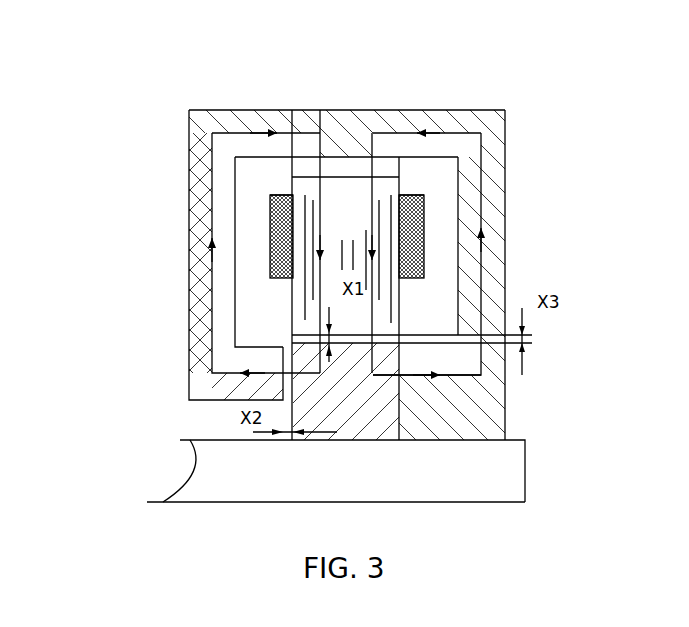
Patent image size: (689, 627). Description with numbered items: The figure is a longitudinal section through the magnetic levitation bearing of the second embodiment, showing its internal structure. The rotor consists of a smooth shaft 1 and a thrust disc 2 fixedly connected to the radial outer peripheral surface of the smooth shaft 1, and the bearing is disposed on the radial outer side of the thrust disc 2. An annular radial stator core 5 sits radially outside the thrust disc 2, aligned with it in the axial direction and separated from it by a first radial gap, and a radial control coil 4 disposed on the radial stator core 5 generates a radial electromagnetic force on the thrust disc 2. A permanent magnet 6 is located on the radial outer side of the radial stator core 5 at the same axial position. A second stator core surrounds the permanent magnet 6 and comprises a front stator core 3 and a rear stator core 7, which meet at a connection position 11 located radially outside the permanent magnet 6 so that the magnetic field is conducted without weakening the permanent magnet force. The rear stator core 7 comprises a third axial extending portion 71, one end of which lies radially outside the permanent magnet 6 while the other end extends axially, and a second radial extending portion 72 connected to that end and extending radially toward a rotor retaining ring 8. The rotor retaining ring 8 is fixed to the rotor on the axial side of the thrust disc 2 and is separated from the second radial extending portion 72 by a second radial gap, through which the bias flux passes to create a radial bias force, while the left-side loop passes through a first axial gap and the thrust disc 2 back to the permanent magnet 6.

The smooth shaft 1 is at (227, 474).
The thrust disc 2 is at (330, 408).
The front stator core 3 is at (205, 318).
The radial control coil 4 is at (283, 233).
The radial stator core 5 is at (273, 182).
The permanent magnet 6 is at (335, 167).
The rear stator core 7 is at (418, 234).
The third axial extending portion 71 is at (373, 128).
The second radial extending portion 72 is at (498, 228).
The rotor retaining ring 8 is at (447, 395).
The connection position 11 is at (308, 201).